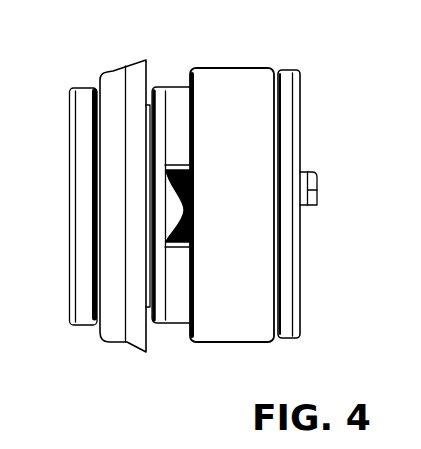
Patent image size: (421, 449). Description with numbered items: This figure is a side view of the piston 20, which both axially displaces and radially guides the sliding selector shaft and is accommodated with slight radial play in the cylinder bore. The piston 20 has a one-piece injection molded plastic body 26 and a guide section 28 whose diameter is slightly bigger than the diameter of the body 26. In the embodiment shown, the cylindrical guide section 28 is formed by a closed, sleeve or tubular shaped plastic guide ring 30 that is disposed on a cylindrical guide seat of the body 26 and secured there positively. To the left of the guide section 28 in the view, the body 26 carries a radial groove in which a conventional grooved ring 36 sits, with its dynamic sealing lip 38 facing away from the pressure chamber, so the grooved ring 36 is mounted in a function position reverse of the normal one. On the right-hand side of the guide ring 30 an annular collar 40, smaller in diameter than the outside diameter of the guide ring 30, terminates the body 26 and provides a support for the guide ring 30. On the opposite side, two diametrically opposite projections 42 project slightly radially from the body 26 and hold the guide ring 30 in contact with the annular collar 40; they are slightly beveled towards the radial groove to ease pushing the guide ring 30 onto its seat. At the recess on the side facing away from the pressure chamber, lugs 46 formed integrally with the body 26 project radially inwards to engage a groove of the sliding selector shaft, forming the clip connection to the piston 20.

The piston 20 is at (320, 72).
The body 26 is at (177, 100).
The guide section 28 is at (222, 58).
The guide ring 30 is at (252, 210).
The grooved ring 36 is at (113, 97).
The dynamic sealing lip 38 is at (141, 70).
The annular collar 40 is at (282, 78).
The projections 42 is at (170, 209).
The lugs 46 is at (316, 205).